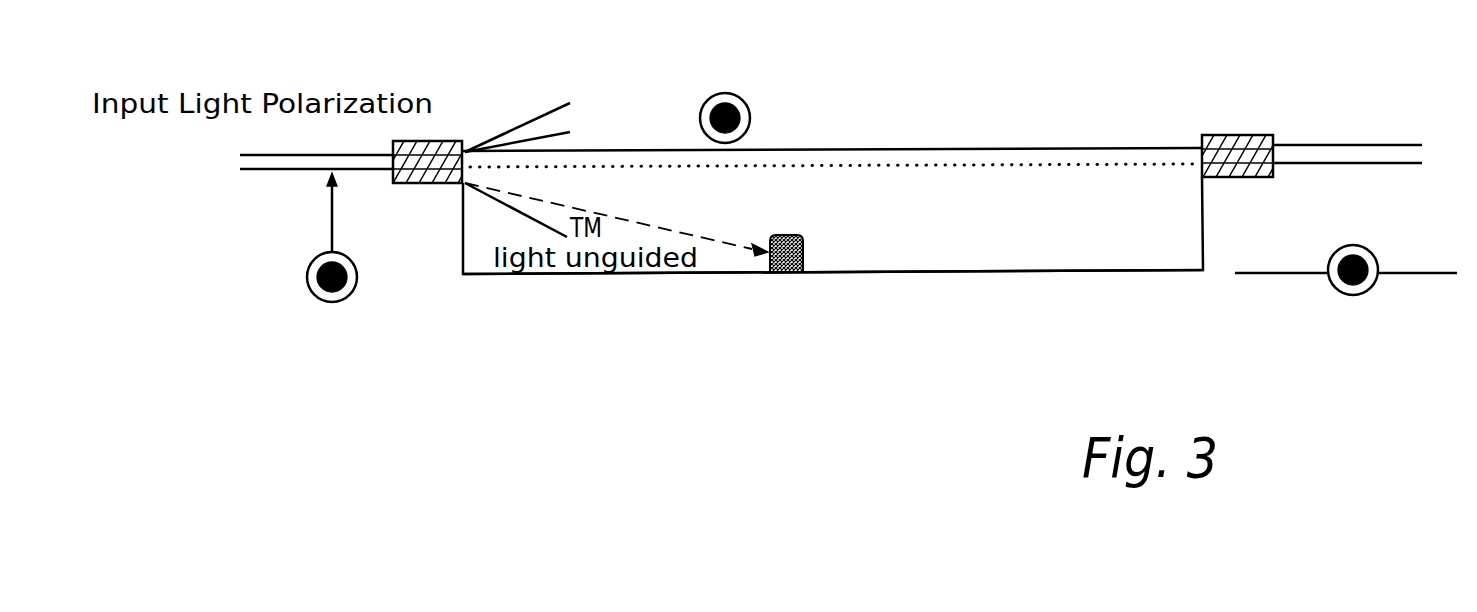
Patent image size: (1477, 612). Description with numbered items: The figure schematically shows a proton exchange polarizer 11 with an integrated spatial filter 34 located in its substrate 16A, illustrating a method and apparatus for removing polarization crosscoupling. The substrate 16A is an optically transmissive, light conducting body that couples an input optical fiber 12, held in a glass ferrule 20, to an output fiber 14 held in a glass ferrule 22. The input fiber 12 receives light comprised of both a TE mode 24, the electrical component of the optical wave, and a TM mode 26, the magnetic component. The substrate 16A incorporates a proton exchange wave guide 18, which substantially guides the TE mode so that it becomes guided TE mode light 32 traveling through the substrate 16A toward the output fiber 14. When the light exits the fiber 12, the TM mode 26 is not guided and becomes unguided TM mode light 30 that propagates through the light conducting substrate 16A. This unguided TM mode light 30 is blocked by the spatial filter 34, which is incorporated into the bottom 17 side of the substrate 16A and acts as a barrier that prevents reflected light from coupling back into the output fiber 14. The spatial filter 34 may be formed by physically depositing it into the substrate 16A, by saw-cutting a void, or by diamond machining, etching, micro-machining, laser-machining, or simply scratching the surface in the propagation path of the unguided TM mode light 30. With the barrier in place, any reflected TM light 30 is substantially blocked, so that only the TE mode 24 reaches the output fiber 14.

The proton exchange polarizer 11 is at (1282, 32).
The optical fiber 12 is at (273, 166).
The output fiber 14 is at (1342, 145).
The substrate 16A is at (1180, 257).
The bottom side of the substrate 17 is at (692, 273).
The proton exchange wave guide 18 is at (1112, 143).
The glass ferrule 20 is at (426, 139).
The glass ferrule 22 is at (1233, 134).
The TE mode 24 is at (400, 283).
The TM mode 26 is at (300, 228).
The unguided TM mode light 30 is at (535, 130).
The guided TE mode light 32 is at (725, 93).
The spatial filter 34 is at (795, 236).